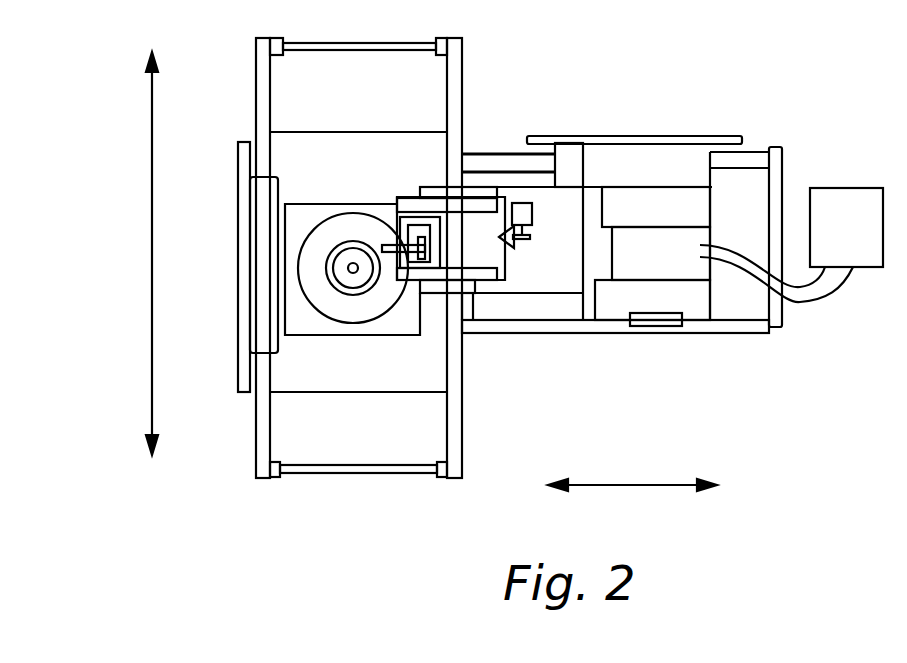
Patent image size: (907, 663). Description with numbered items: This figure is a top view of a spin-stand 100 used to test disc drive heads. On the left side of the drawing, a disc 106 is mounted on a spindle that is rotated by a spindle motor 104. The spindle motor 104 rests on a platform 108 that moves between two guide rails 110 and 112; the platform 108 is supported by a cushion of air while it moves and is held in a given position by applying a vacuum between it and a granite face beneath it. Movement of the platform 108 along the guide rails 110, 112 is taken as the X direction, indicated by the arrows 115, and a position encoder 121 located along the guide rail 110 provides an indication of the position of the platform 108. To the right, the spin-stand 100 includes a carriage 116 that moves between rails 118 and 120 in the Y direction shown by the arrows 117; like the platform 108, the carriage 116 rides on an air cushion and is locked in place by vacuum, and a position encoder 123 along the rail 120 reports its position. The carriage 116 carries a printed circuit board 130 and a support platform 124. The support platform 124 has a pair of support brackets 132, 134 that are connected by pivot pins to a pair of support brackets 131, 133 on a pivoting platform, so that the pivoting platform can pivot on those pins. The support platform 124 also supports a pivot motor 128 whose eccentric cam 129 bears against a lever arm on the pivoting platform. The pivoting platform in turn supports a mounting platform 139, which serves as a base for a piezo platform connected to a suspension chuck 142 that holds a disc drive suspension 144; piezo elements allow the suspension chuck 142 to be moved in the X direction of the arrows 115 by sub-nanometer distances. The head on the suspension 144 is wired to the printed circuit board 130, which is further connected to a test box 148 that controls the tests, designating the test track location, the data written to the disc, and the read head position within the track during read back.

The spin-stand 100 is at (319, 530).
The spindle motor 104 is at (330, 246).
The disc 106 is at (346, 268).
The platform 108 is at (378, 372).
The guide rail 110 is at (255, 466).
The guide rail 112 is at (457, 478).
The arrows 115 is at (138, 253).
The carriage 116 is at (672, 223).
The arrows 117 is at (632, 499).
The rail 118 is at (748, 328).
The rail 120 is at (771, 149).
The position encoder 121 is at (236, 353).
The position encoder 123 is at (690, 136).
The support platform 124 is at (567, 273).
The pivot motor 128 is at (520, 203).
The eccentric cam 129 is at (531, 238).
The printed circuit board 130 is at (670, 268).
The support bracket 131 is at (441, 198).
The support bracket 132 is at (470, 187).
The support bracket 133 is at (483, 269).
The support bracket 134 is at (467, 300).
The mounting platform 139 is at (440, 242).
The suspension chuck 142 is at (401, 232).
The disc drive suspension 144 is at (385, 244).
The test box 148 is at (862, 238).